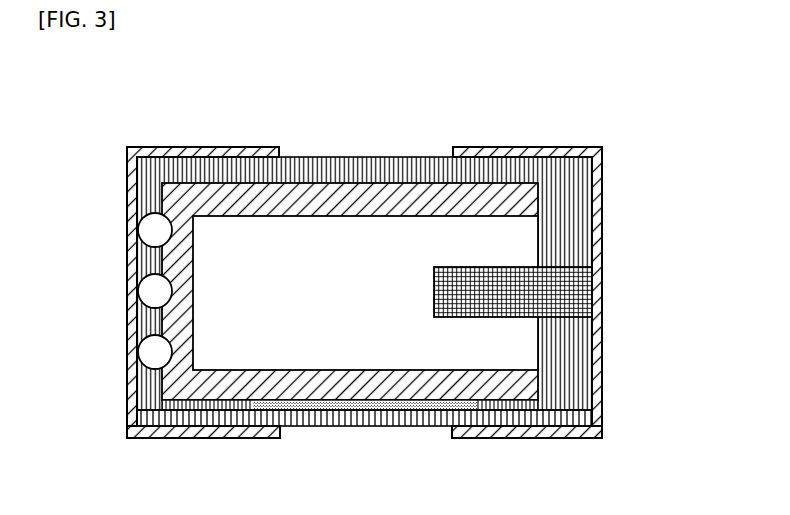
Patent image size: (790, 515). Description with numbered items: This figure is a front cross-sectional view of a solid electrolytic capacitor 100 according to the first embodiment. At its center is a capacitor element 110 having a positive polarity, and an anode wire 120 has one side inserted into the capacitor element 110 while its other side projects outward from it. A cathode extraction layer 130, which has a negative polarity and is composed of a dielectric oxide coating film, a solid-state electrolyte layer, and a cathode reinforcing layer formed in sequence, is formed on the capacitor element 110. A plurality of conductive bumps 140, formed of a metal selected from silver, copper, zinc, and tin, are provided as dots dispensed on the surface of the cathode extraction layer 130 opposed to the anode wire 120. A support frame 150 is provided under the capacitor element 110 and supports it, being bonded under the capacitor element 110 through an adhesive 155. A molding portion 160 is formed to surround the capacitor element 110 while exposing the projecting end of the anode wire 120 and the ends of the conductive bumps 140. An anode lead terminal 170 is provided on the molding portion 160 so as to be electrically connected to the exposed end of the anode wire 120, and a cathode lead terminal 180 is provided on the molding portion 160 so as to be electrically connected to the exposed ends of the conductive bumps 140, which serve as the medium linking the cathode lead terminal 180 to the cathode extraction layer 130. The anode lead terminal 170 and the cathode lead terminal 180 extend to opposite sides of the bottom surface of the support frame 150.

The solid electrolytic capacitor 100 is at (570, 132).
The capacitor element 110 is at (330, 237).
The anode wire 120 is at (583, 290).
The cathode extraction layer 130 is at (423, 195).
The conductive bumps 140 is at (150, 232).
The support frame 150 is at (353, 428).
The adhesive 155 is at (425, 428).
The molding portion 160 is at (583, 367).
The anode lead terminal 170 is at (530, 439).
The cathode lead terminal 180 is at (205, 439).